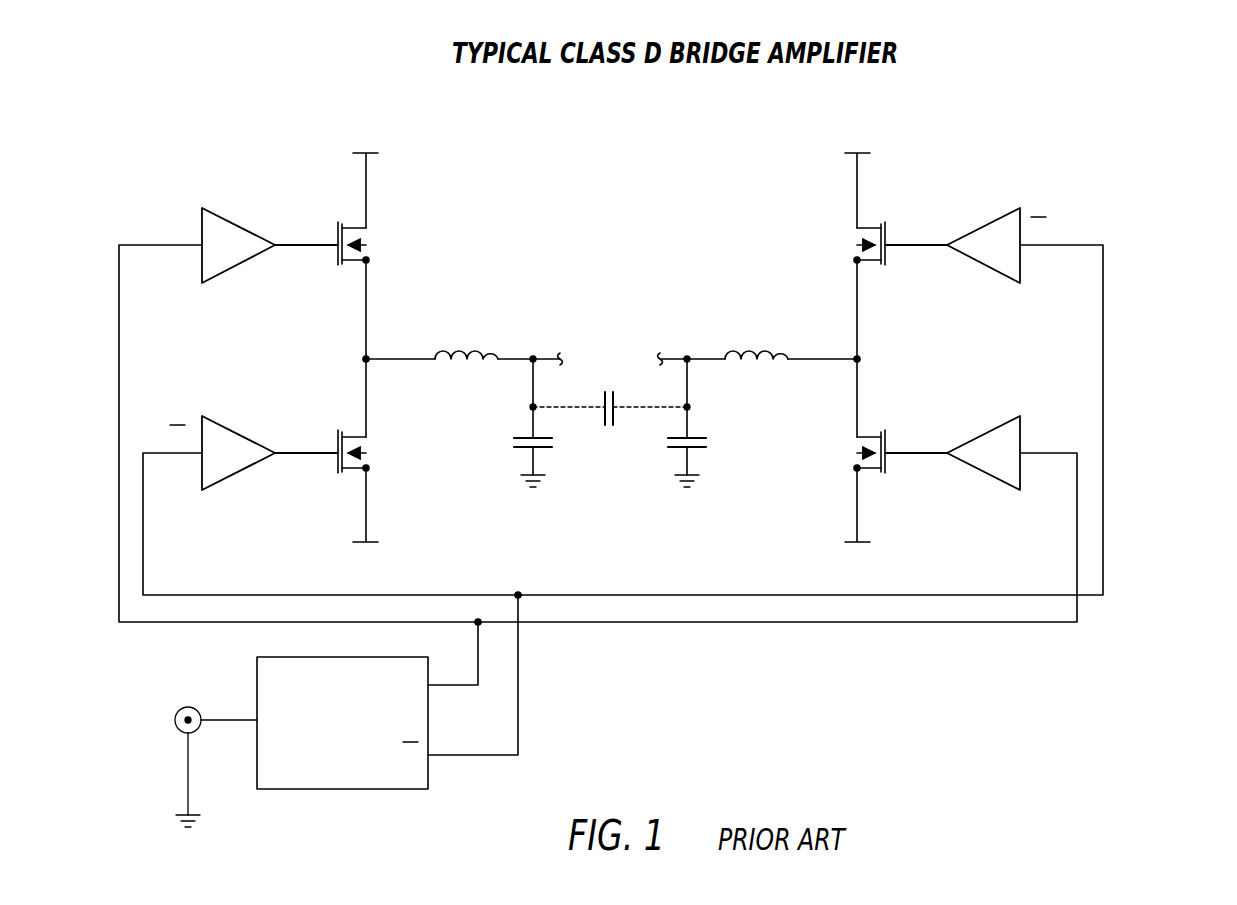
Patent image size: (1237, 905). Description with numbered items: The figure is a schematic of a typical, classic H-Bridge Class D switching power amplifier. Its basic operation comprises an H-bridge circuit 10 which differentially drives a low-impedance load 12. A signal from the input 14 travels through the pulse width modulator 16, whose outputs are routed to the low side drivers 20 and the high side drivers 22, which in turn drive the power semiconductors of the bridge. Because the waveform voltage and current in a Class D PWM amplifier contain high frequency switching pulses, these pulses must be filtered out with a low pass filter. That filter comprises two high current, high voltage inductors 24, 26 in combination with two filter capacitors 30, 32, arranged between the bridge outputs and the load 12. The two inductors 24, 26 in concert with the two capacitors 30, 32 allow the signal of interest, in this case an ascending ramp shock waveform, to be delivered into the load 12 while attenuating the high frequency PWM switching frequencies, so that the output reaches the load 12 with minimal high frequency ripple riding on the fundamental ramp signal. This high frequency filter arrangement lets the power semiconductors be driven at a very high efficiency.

The H-bridge circuit 10 is at (1143, 356).
The load 12 is at (605, 335).
The input 14 is at (182, 722).
The pulse width modulator 16 is at (375, 790).
The low side drivers 20 is at (222, 445).
The high side drivers 22 is at (218, 225).
The inductor 24 is at (470, 332).
The inductor 26 is at (733, 330).
The filter capacitor 30 is at (502, 455).
The filter capacitor 32 is at (722, 467).